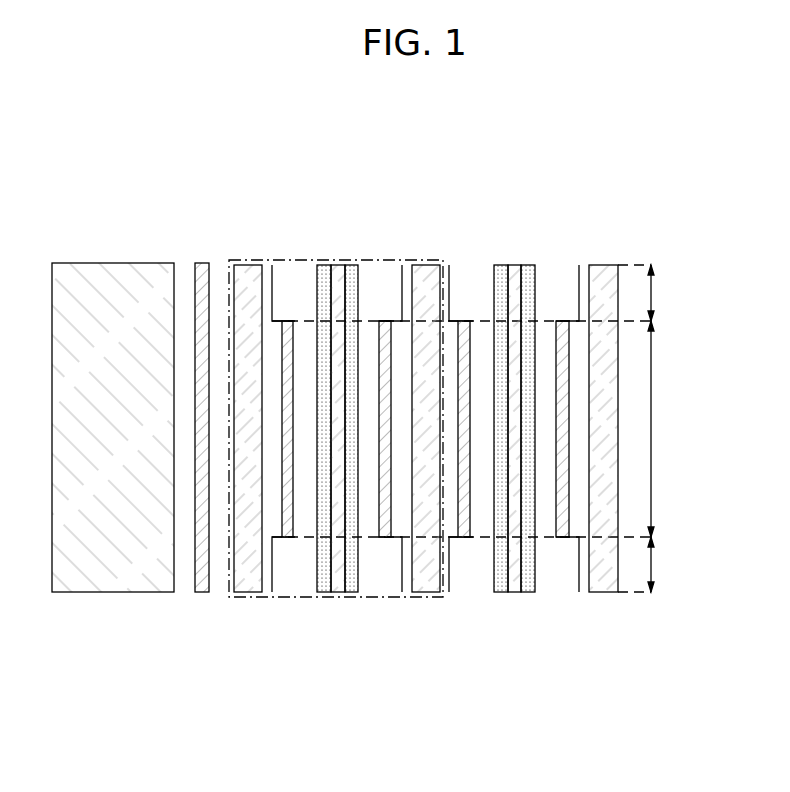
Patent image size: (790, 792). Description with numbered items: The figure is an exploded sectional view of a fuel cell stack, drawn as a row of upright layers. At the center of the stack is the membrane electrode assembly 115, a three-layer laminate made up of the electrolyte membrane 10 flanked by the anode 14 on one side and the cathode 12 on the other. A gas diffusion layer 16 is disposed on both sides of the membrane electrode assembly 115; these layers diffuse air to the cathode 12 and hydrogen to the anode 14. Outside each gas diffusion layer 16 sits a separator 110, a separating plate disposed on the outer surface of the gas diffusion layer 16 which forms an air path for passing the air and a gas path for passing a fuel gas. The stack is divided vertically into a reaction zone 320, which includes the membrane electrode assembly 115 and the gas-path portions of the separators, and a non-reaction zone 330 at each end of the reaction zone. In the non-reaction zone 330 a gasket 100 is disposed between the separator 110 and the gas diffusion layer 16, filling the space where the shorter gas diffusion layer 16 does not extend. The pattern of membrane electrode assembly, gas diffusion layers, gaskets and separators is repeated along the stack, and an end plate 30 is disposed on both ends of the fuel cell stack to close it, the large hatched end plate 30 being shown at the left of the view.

The end plate 30 is at (137, 278).
The gasket 100 is at (270, 262).
The gas diffusion layer 16 is at (285, 330).
The separator 110 is at (249, 585).
The membrane electrode assembly 115 is at (340, 490).
The anode 14 is at (325, 585).
The electrolyte membrane 10 is at (338, 585).
The cathode 12 is at (352, 585).
The non-reaction zone 330 is at (670, 428).
The reaction zone 320 is at (670, 429).